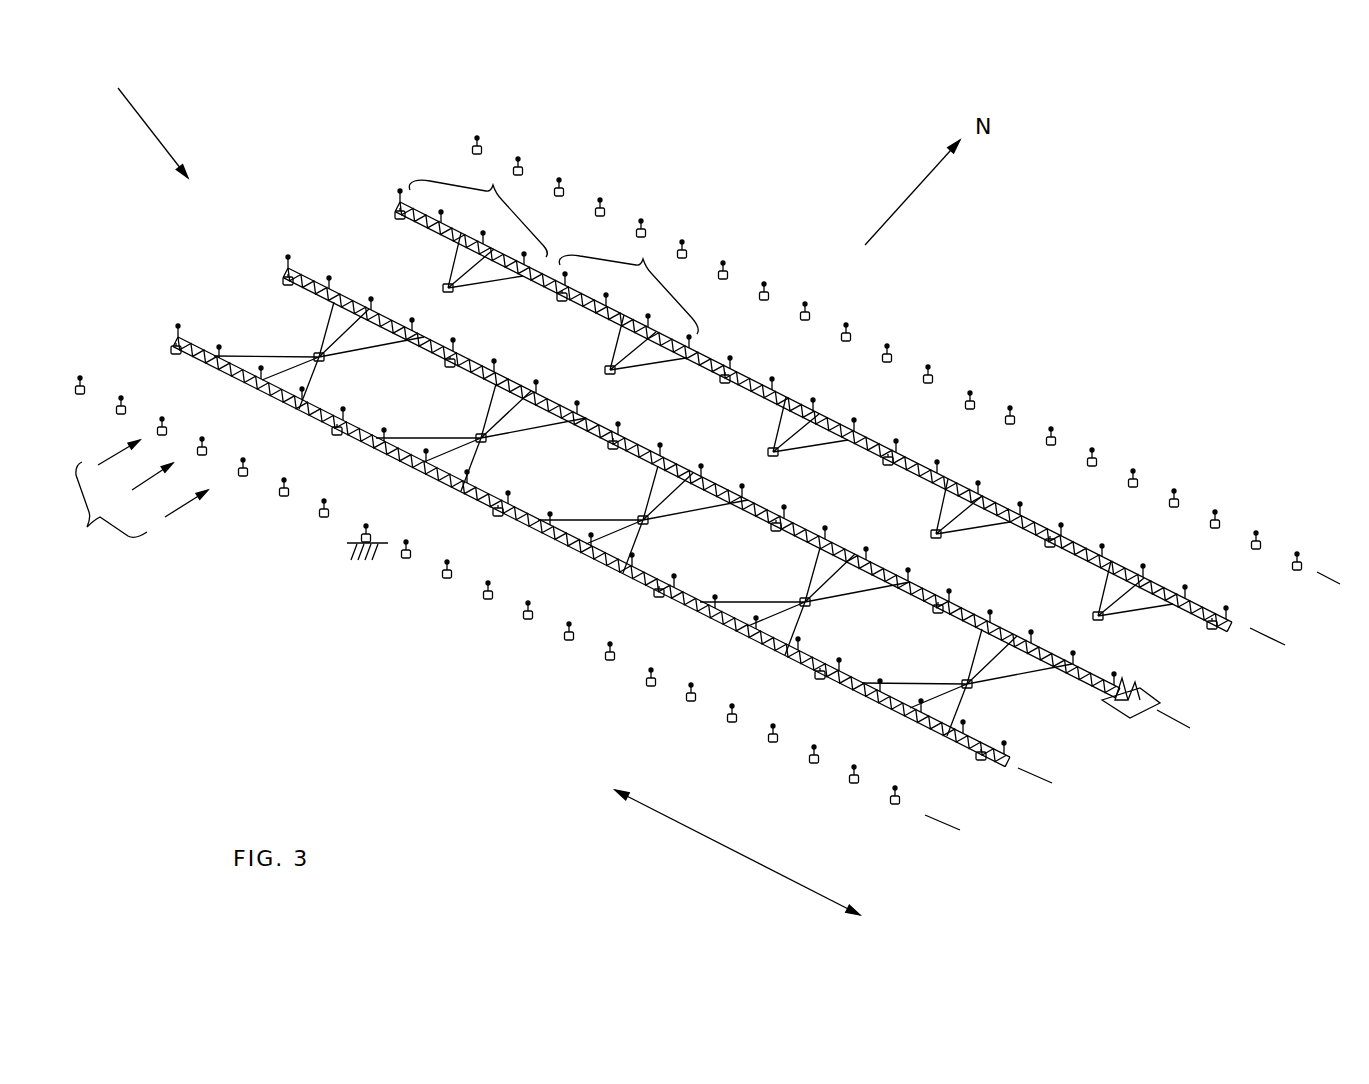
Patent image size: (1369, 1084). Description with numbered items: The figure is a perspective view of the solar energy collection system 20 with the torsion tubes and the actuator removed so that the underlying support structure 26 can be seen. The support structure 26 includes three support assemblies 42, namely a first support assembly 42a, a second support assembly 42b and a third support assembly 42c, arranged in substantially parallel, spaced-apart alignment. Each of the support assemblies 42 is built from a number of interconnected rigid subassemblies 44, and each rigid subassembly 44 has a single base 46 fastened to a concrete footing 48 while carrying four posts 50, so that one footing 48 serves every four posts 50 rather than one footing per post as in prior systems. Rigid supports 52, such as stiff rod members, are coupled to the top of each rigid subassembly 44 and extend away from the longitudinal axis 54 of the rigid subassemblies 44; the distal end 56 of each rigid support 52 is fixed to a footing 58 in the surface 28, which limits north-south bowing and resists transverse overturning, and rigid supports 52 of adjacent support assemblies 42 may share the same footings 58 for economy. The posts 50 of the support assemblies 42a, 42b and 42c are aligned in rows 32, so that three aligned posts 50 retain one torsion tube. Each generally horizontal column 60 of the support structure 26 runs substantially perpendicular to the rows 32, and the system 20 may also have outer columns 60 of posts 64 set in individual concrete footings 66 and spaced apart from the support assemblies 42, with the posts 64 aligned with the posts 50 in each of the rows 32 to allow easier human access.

The solar energy collection system 20 is at (503, 794).
The support structure 26 is at (136, 116).
The surface 28 is at (350, 549).
The rows 32 is at (140, 506).
The support assemblies 42 is at (667, 426).
The first support assembly 42a is at (205, 335).
The second support assembly 42b is at (307, 300).
The third support assembly 42c is at (400, 192).
The rigid subassemblies 44 is at (490, 182).
The base 46 is at (828, 682).
The concrete footing 48 is at (398, 222).
The posts 50 is at (1100, 535).
The rigid supports 52 is at (357, 345).
The longitudinal axis 54 is at (668, 816).
The distal end 56 is at (640, 515).
The footing 58 is at (933, 545).
The columns 60 is at (1337, 578).
The posts 64 is at (972, 388).
The individual concrete footings 66 is at (968, 412).